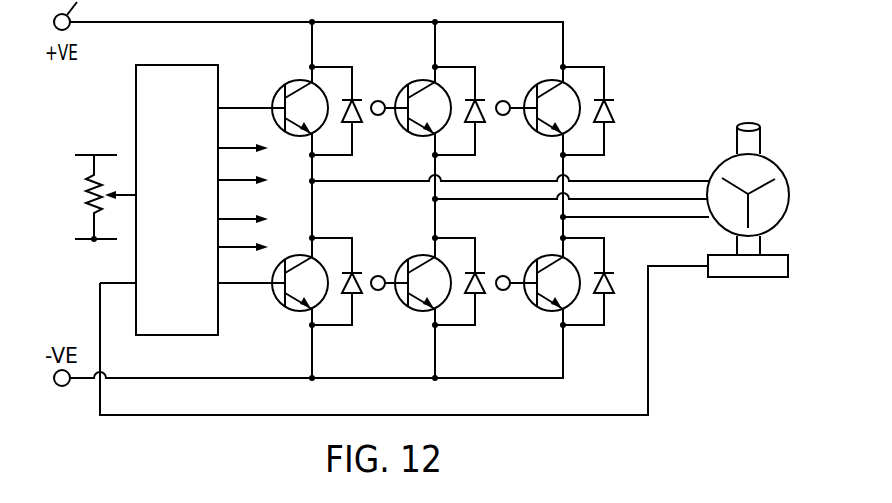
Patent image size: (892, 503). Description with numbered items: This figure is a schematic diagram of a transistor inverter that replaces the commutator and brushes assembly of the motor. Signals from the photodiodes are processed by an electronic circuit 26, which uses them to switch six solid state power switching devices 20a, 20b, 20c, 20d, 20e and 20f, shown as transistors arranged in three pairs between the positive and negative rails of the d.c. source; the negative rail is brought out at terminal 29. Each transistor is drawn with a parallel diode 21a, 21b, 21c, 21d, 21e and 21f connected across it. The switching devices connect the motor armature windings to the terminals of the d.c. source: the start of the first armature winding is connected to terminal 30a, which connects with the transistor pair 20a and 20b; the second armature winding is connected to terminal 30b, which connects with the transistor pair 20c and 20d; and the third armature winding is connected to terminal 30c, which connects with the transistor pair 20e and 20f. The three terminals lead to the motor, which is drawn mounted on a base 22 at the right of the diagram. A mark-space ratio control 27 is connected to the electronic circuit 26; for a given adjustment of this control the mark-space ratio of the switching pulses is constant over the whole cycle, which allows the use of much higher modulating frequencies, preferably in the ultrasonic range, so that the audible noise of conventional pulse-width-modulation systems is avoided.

The solid state power switching device 20a is at (290, 83).
The solid state power switching device 20b is at (293, 308).
The solid state power switching device 20c is at (413, 83).
The solid state power switching device 20d is at (418, 256).
The solid state power switching device 20e is at (542, 83).
The solid state power switching device 20f is at (553, 256).
The diode 21a is at (357, 122).
The diode 21b is at (357, 293).
The diode 21c is at (480, 122).
The diode 21d is at (480, 293).
The diode 21e is at (608, 122).
The diode 21f is at (587, 325).
The motor mounting base 22 is at (726, 277).
The electronic circuit 26 is at (193, 335).
The mark-space ratio control 27 is at (85, 212).
The negative supply terminal 29 is at (62, 386).
The terminal 30a is at (314, 183).
The terminal 30b is at (437, 200).
The terminal 30c is at (565, 218).